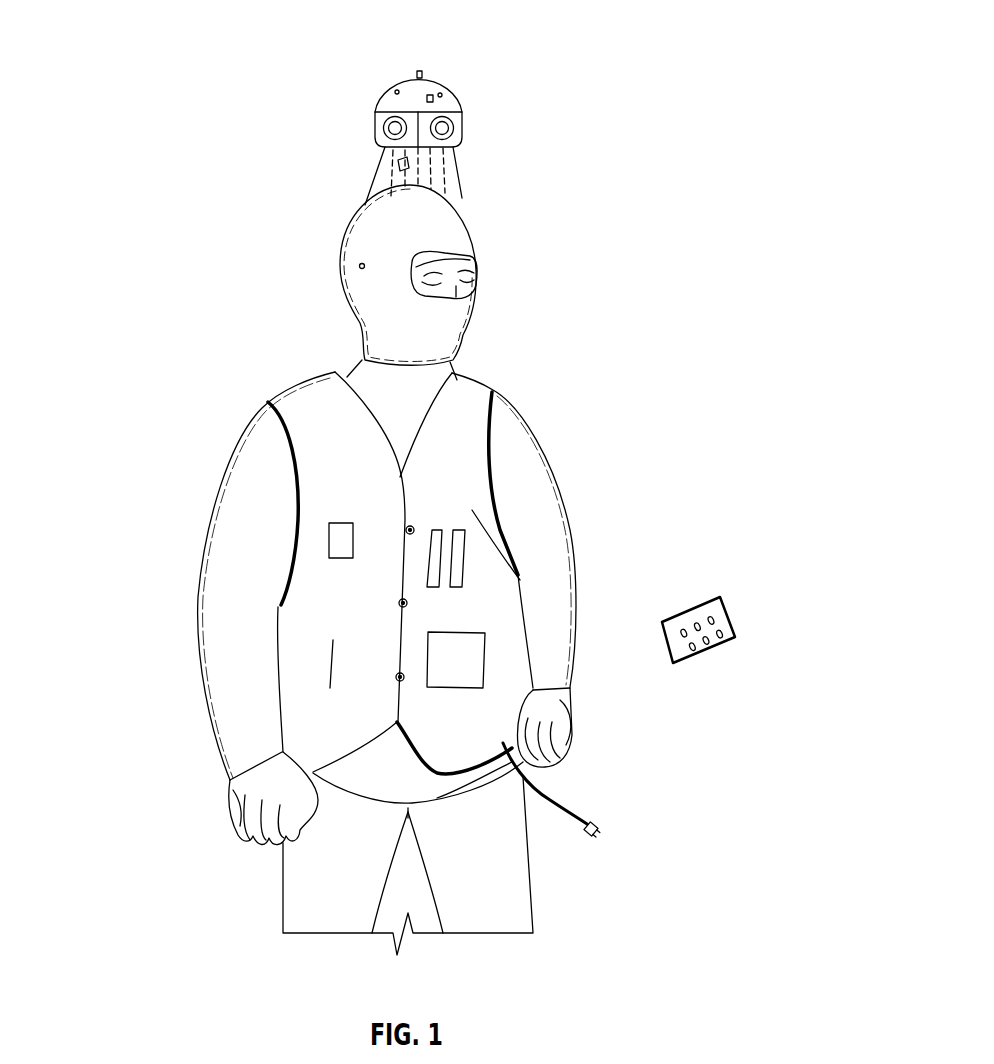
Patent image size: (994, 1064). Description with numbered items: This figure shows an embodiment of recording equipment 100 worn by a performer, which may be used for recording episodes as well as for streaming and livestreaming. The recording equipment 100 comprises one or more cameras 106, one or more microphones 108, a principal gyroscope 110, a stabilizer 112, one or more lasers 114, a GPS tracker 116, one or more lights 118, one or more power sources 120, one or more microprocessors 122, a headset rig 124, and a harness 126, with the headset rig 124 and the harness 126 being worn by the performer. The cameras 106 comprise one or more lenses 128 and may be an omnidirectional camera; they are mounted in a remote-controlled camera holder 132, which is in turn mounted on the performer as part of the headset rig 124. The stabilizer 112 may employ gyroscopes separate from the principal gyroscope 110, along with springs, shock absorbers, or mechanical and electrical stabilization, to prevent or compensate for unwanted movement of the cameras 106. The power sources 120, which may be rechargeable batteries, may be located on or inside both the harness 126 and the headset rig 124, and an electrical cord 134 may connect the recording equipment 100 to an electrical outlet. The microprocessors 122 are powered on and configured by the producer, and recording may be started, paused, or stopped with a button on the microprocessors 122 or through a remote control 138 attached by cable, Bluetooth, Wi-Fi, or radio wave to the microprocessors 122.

The recording equipment 100 is at (642, 33).
The cameras 106 is at (460, 137).
The microphones 108 is at (359, 267).
The principal gyroscope 110 is at (433, 98).
The stabilizer 112 is at (398, 166).
The lasers 114 is at (422, 75).
The GPS tracker 116 is at (329, 533).
The lights 118 is at (395, 91).
The power sources 120 is at (435, 572).
The microprocessors 122 is at (465, 652).
The headset rig 124 is at (296, 254).
The harness 126 is at (300, 398).
The lenses 128 is at (388, 128).
The remote-controlled camera holder 132 is at (453, 173).
The electrical cord 134 is at (563, 802).
The remote control 138 is at (717, 597).